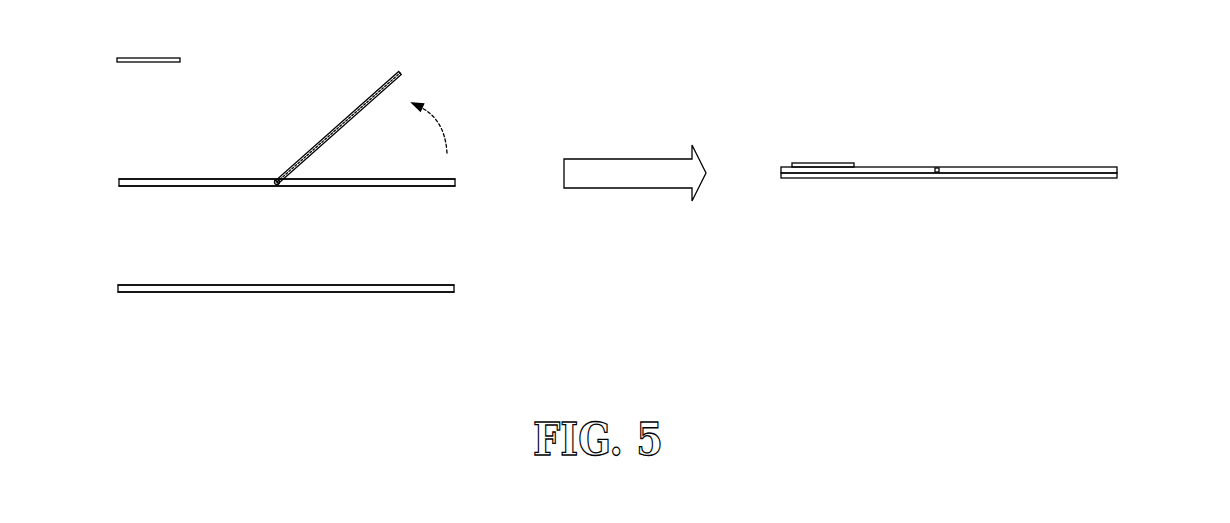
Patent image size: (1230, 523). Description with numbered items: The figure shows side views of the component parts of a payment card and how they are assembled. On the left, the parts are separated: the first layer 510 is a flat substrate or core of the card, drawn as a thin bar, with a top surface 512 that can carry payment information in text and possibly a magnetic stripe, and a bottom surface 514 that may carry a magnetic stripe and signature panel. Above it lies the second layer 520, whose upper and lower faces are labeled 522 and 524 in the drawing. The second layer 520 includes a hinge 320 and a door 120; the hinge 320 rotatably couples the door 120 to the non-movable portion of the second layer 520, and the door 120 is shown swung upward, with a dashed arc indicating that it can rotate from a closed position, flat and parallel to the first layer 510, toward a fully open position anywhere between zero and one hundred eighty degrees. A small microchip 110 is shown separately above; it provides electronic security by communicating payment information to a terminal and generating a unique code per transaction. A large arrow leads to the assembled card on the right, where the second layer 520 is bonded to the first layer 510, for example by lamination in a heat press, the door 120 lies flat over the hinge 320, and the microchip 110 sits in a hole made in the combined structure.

The microchip 110 is at (166, 34).
The door 120 is at (416, 64).
The hinge 320 is at (266, 170).
The first layer 510 is at (455, 270).
The top surface 512 is at (120, 276).
The bottom surface 514 is at (116, 314).
The second layer 520 is at (462, 170).
The upper surface of upper substrate 522 is at (121, 169).
The lower surface of upper substrate 524 is at (121, 198).